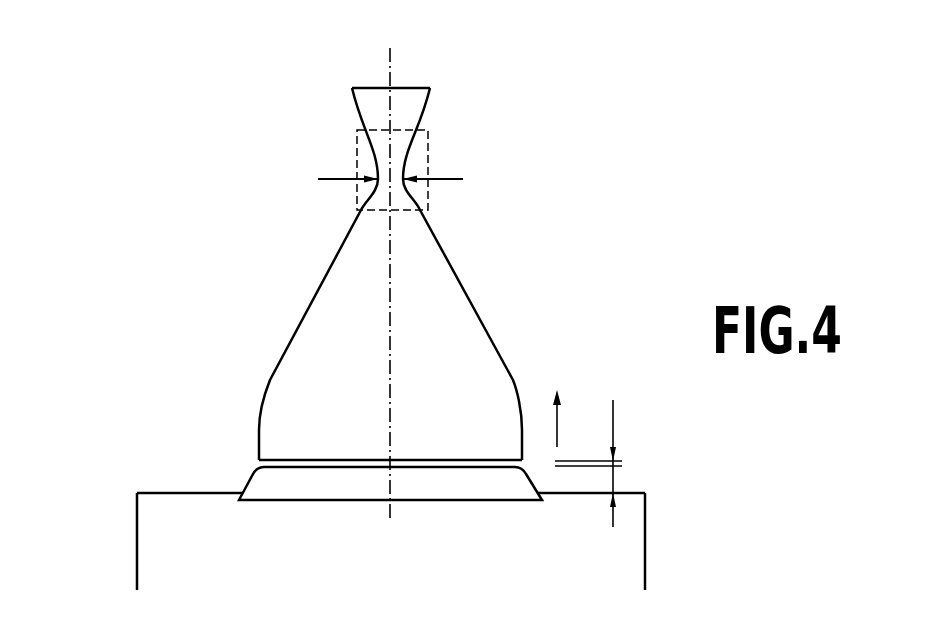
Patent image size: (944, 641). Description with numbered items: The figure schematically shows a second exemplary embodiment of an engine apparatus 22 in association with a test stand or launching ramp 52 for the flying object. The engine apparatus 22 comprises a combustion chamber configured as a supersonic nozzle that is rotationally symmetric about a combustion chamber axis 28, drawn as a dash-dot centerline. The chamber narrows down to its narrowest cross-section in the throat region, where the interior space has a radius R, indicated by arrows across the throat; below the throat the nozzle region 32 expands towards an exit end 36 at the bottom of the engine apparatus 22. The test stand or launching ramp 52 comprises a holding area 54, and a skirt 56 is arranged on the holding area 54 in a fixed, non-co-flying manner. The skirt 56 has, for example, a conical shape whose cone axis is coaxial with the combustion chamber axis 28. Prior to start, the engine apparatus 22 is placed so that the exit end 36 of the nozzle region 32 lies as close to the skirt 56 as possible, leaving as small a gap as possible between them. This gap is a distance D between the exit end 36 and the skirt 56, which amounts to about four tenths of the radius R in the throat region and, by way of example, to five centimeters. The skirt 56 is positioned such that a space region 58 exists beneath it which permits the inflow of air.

The combustion chamber axis 28 is at (392, 58).
The engine apparatus 22 is at (448, 288).
The nozzle region 32 is at (327, 308).
The radius R is at (408, 163).
The exit end 36 is at (466, 462).
The skirt 56 is at (253, 470).
The holding area 54 is at (190, 492).
The test stand or launching ramp 52 is at (645, 542).
The space region 58 is at (338, 568).
The distance D is at (622, 463).